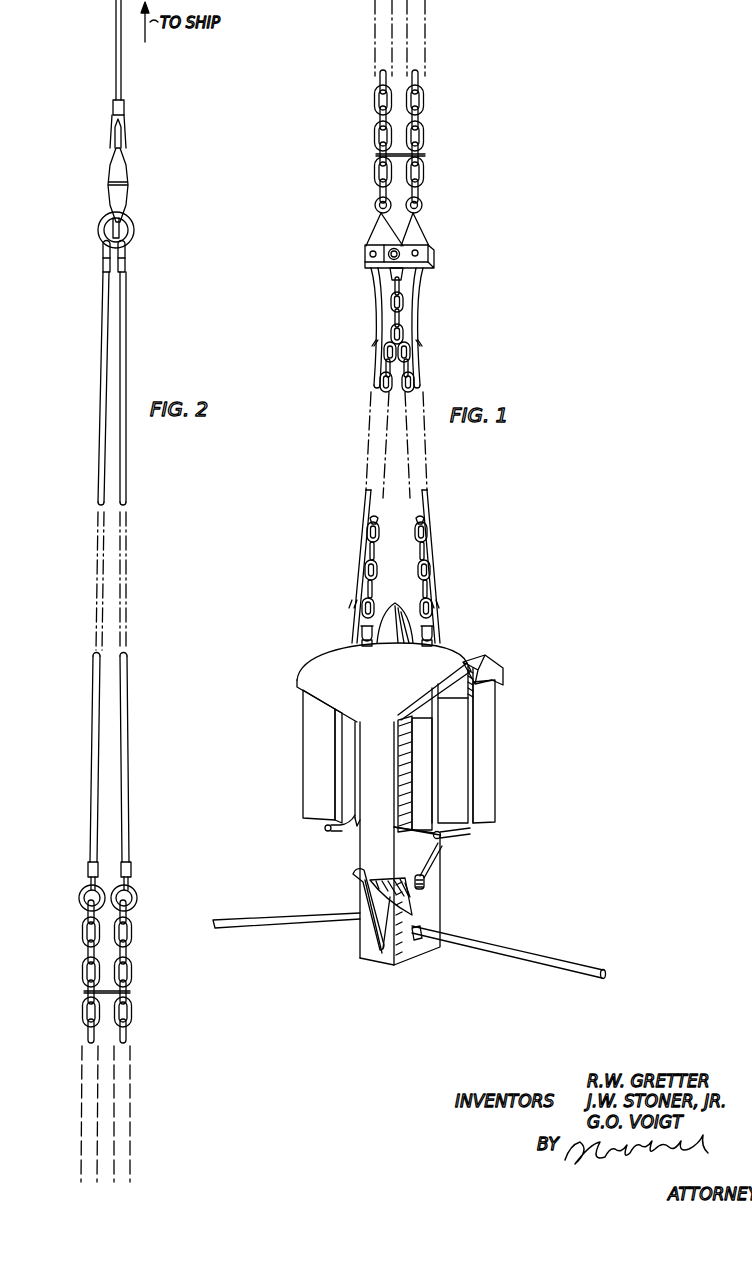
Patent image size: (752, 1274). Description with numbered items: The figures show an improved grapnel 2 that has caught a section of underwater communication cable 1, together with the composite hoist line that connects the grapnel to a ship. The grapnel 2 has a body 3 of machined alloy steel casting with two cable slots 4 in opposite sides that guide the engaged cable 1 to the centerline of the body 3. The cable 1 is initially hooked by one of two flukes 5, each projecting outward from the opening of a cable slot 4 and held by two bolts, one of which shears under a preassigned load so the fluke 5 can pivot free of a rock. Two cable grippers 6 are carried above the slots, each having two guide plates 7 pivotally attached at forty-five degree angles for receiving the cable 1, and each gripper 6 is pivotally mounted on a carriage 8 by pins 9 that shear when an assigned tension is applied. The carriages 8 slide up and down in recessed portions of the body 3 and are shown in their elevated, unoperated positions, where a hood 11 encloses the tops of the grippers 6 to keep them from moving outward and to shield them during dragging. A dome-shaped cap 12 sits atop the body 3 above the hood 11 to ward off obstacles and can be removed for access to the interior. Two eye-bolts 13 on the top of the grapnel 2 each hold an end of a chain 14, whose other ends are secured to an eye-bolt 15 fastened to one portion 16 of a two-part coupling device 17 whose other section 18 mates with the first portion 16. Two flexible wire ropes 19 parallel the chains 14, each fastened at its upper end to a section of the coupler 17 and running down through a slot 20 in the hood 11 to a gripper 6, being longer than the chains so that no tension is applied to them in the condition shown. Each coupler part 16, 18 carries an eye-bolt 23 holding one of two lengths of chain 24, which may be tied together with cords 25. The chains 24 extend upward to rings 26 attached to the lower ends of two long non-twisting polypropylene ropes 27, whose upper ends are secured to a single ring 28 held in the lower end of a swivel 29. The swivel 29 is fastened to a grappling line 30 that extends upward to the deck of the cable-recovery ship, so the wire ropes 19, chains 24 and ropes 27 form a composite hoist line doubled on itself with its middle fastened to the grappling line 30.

In FIG. 1, the underwater communication cable 1 is at (260, 916).
In FIG. 1, the grapnel 2 is at (527, 786).
In FIG. 1, the body 3 is at (362, 848).
In FIG. 1, the cable slot 4 is at (435, 860).
In FIG. 1, the fluke 5 is at (352, 878).
In FIG. 1, the cable gripper 6 is at (305, 708).
In FIG. 1, the guide plate 7 is at (487, 728).
In FIG. 1, the carriage 8 is at (342, 756).
In FIG. 1, the pin 9 is at (325, 830).
In FIG. 1, the hood 11 is at (320, 658).
In FIG. 1, the dome-shaped cap 12 is at (395, 603).
In FIG. 1, the eye-bolt 13 is at (358, 622).
In FIG. 1, the chain 14 is at (396, 552).
In FIG. 1, the eye-bolt 15 is at (405, 289).
In FIG. 1, the coupling portion 16 is at (418, 229).
In FIG. 1, the two-part coupling device 17 is at (349, 264).
In FIG. 1, the coupling section 18 is at (377, 231).
In FIG. 1, the flexible wire rope 19 is at (410, 498).
In FIG. 1, the slot 20 is at (490, 663).
In FIG. 1, the eye-bolt 23 is at (389, 204).
In FIG. 2, the chain 24 is at (96, 962).
In FIG. 1, the chain 24 is at (390, 100).
In FIG. 2, the cord 25 is at (130, 990).
In FIG. 1, the cord 25 is at (425, 155).
In FIG. 2, the ring 26 is at (100, 894).
In FIG. 2, the rope 27 is at (106, 300).
In FIG. 2, the ring 28 is at (134, 228).
In FIG. 2, the swivel 29 is at (128, 180).
In FIG. 2, the grappling line 30 is at (124, 79).